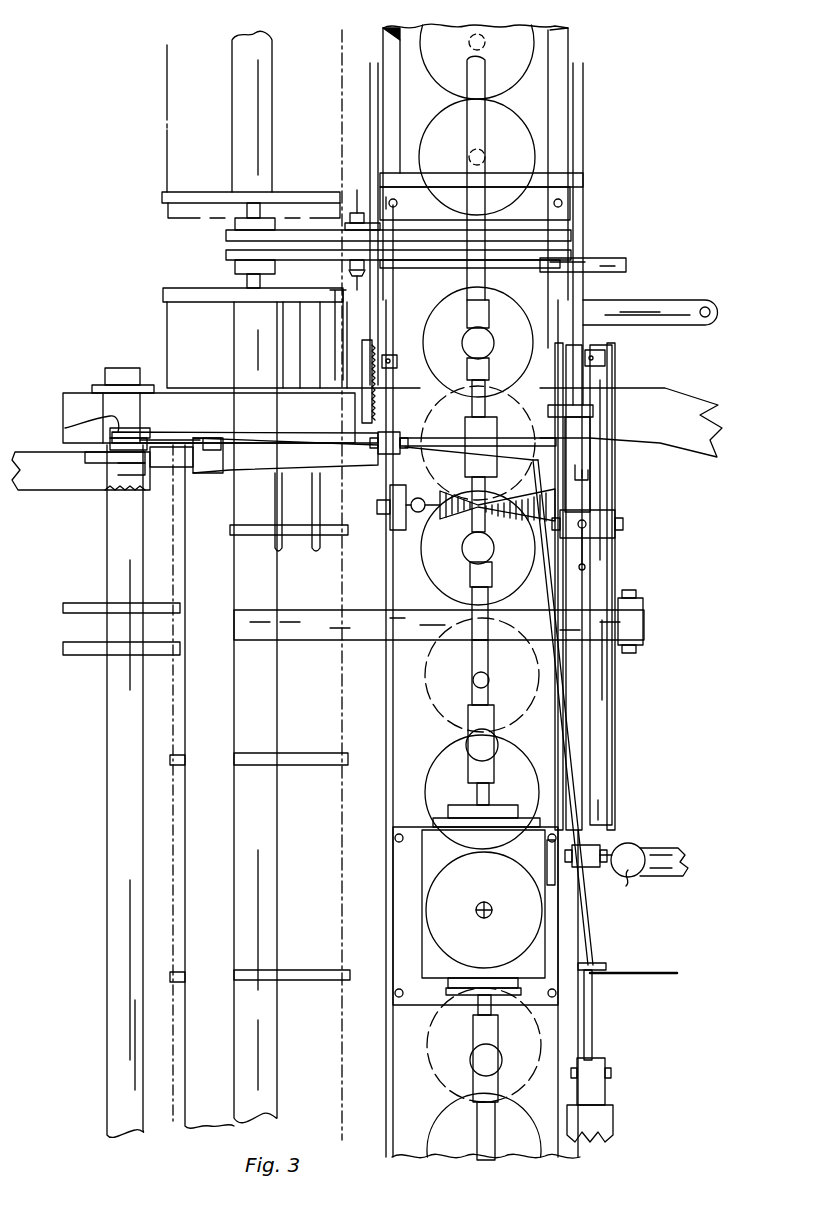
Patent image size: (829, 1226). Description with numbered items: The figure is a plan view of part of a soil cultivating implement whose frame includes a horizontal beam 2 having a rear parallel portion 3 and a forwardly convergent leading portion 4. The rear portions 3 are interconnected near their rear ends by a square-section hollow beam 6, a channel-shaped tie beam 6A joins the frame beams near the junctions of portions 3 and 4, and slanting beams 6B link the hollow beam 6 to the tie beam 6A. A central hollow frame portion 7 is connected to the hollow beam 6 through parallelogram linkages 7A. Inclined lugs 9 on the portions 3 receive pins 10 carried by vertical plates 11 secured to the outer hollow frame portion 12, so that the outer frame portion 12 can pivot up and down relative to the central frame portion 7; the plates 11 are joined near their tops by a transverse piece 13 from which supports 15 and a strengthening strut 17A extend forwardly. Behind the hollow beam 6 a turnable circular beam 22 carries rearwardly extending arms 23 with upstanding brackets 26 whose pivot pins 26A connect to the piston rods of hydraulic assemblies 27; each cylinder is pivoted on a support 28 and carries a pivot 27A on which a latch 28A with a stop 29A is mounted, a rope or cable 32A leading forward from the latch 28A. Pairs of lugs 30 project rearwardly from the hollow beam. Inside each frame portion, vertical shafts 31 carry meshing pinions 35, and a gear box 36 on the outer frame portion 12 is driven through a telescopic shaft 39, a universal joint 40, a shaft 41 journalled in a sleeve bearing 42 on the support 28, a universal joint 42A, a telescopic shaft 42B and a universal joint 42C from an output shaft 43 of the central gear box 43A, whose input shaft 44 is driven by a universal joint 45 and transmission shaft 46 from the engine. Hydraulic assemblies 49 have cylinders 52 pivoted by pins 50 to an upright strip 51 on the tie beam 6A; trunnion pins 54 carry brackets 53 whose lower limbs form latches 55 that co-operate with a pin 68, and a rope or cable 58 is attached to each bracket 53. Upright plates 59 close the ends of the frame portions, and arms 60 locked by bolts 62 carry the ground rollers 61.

The frame beam 2 is at (712, 396).
The rear parallel portion 3 is at (60, 404).
The leading portion 4 is at (718, 432).
The hollow beam 6 is at (200, 782).
The tie beam 6A is at (590, 448).
The slanting beam 6B is at (300, 610).
The central hollow frame portion 7 is at (388, 730).
The parallelogram linkage 7A is at (645, 614).
The lug 9 is at (370, 330).
The pin 10 is at (445, 352).
The vertical plate 11 is at (580, 192).
The outer hollow frame portion 12 is at (415, 90).
The transverse piece 13 is at (455, 178).
The support 15 is at (392, 45).
The strengthening strut 17A is at (700, 302).
The horizontal beam 22 is at (120, 368).
The arm 23 is at (45, 492).
The bracket 26 is at (95, 463).
The pivot pin 26A is at (65, 424).
The hydraulic piston and cylinder assembly 27 is at (218, 475).
The pivot 27A is at (290, 438).
The support 28 is at (402, 450).
The latch 28A is at (200, 438).
The stop 29A is at (228, 432).
The lug 30 is at (80, 603).
The vertical shaft 31 is at (468, 684).
The pull member 32A is at (360, 420).
The pinion 35 is at (540, 130).
The gear box 36 is at (420, 910).
The telescopic transmission shaft 39 is at (478, 115).
The universal joint 40 is at (482, 342).
The shaft 41 is at (480, 388).
The sleeve bearing 42 is at (465, 460).
The universal joint 42A is at (462, 548).
The telescopic shaft 42B is at (472, 658).
The universal joint 42C is at (480, 748).
The output shaft 43 is at (476, 792).
The central gear box 43A is at (440, 830).
The input shaft 44 is at (548, 862).
The universal joint 45 is at (626, 877).
The transmission shaft 46 is at (685, 860).
The hydraulic piston and cylinder assembly 49 is at (612, 716).
The pivot pin 50 is at (598, 848).
The upright strip 51 is at (592, 1005).
The cylinder 52 is at (612, 762).
The bracket 53 is at (617, 520).
The trunnion pin 54 is at (623, 534).
The latch 55 is at (612, 412).
The pull member 58 is at (660, 973).
The upright plate 59 is at (558, 228).
The arm 60 is at (226, 254).
The ground roller 61 is at (165, 62).
The bolt 62 is at (355, 205).
The pin 68 is at (610, 258).